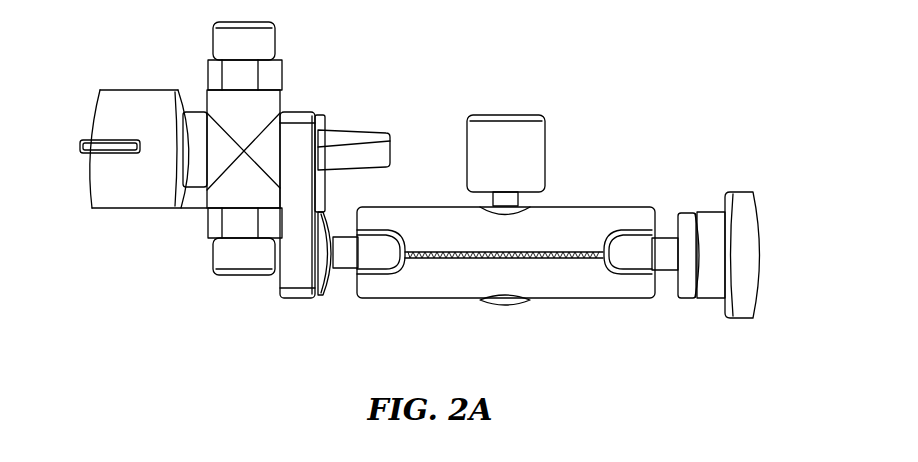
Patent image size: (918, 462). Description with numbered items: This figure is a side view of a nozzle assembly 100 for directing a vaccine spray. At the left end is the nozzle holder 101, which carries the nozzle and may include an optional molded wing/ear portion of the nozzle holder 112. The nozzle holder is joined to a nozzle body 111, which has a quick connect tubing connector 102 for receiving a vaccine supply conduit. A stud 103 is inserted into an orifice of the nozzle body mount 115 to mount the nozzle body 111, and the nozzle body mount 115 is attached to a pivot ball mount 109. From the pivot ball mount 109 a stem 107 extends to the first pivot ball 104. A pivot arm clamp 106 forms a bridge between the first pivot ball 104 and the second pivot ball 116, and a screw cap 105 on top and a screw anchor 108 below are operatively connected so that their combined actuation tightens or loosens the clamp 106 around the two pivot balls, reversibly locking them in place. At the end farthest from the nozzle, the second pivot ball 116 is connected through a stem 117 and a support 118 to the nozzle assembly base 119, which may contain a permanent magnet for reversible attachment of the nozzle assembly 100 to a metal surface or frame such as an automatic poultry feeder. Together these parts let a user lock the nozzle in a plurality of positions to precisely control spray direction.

The nozzle assembly 100 is at (650, 83).
The nozzle holder 101 is at (120, 195).
The quick connect tubing connector 102 is at (265, 43).
The stud 103 is at (363, 132).
The first pivot ball 104 is at (373, 249).
The screw cap 105 is at (545, 135).
The pivot arm clamp 106 is at (608, 210).
The stem 107 is at (343, 262).
The screw anchor 108 is at (505, 302).
The pivot ball mount 109 is at (323, 287).
The nozzle body 111 is at (233, 170).
The wing/ear molded portion of the nozzle holder 112 is at (103, 143).
The nozzle body mount 115 is at (295, 162).
The second pivot ball 116 is at (633, 253).
The stem 117 is at (665, 265).
The support 118 is at (708, 217).
The nozzle assembly base 119 is at (750, 195).